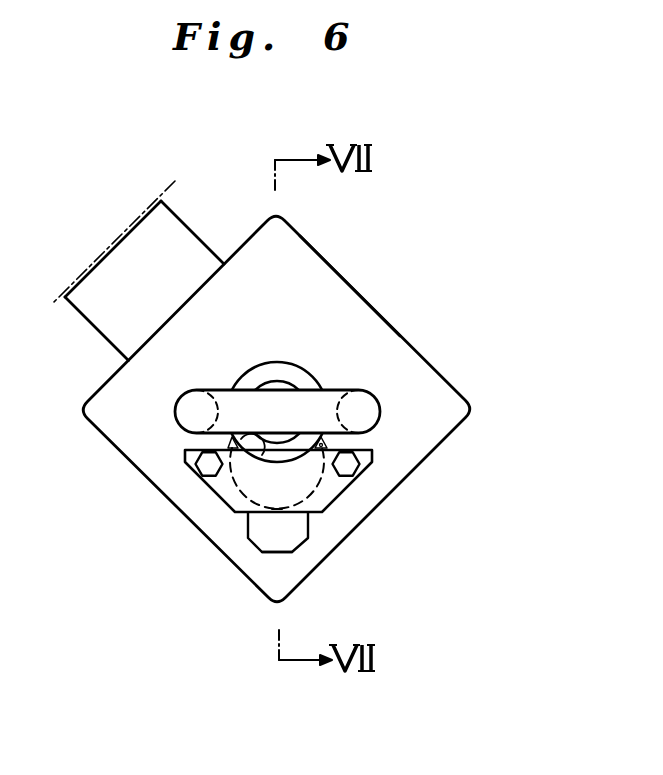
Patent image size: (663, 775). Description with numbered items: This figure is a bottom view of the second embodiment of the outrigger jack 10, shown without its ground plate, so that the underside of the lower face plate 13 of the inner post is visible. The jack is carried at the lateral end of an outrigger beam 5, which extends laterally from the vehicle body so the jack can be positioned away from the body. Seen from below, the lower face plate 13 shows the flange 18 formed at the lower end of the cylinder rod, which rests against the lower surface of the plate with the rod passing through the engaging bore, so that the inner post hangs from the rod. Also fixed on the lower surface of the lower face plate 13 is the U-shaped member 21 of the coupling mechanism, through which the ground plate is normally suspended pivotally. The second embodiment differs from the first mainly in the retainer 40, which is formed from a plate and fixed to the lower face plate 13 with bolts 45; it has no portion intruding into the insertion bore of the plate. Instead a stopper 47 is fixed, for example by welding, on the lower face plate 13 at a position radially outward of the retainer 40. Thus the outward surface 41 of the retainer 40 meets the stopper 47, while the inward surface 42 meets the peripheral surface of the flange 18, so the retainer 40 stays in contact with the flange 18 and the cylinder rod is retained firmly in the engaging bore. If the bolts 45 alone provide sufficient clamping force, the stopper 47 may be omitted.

The outrigger beam 5 is at (197, 237).
The outrigger jack 10 is at (539, 330).
The lower face plate 13 is at (348, 293).
The flange 18 is at (293, 365).
The U-shaped member 21 is at (330, 402).
The retainer 40 is at (330, 490).
The outward surface 41 is at (253, 547).
The inward surface 42 is at (241, 439).
The bolts 45 is at (208, 473).
The stopper 47 is at (287, 547).